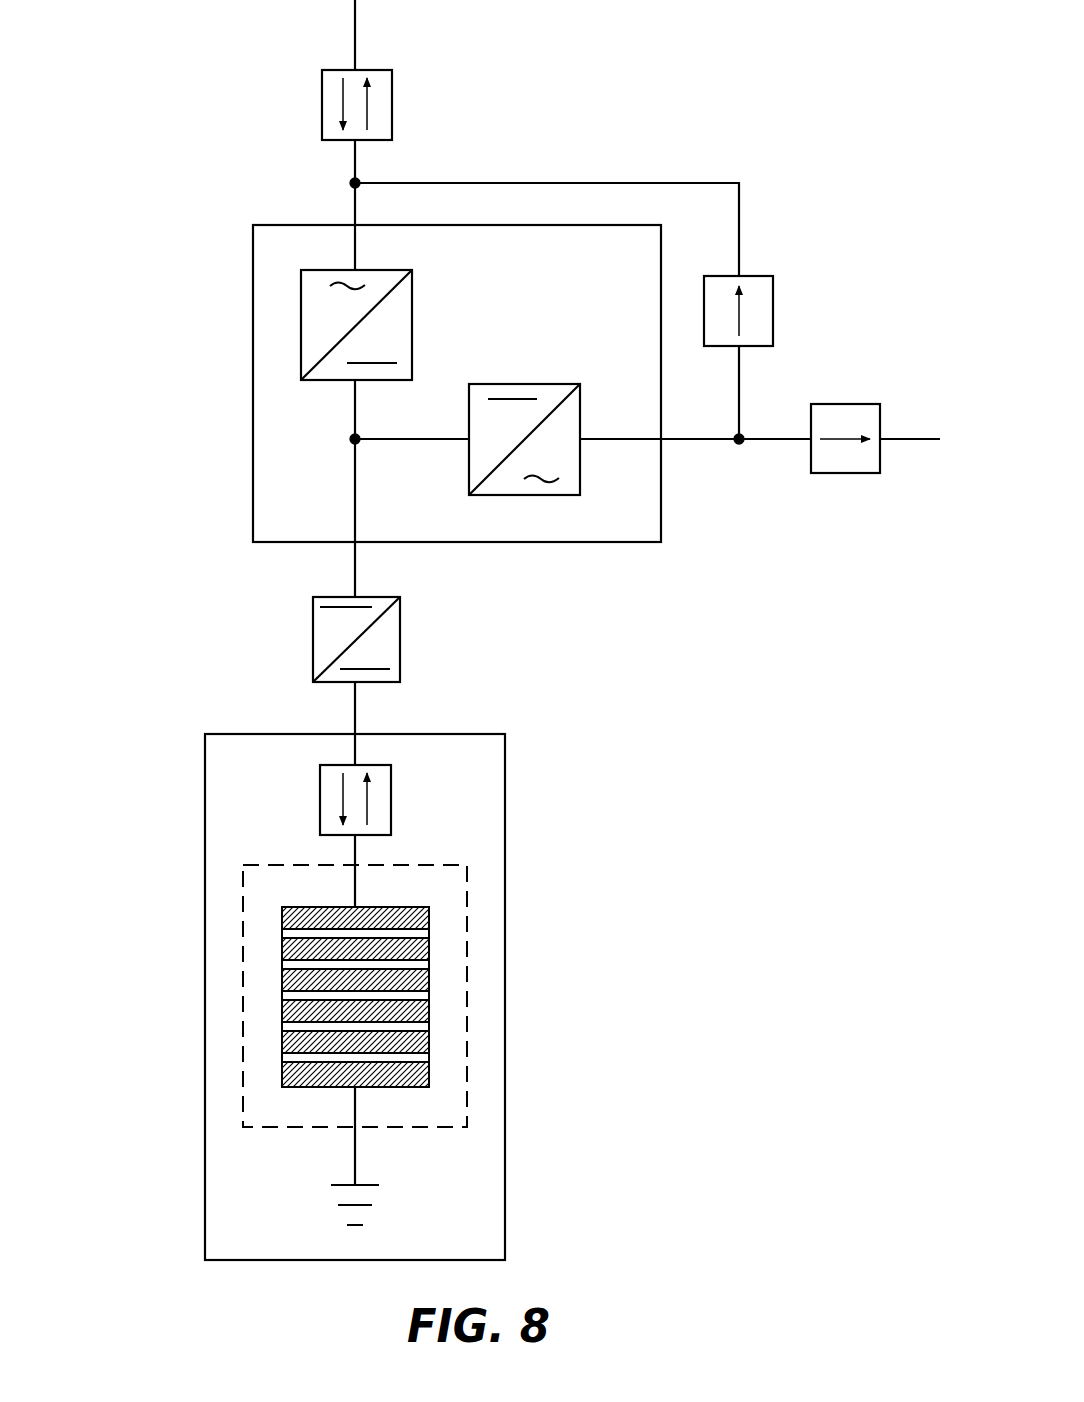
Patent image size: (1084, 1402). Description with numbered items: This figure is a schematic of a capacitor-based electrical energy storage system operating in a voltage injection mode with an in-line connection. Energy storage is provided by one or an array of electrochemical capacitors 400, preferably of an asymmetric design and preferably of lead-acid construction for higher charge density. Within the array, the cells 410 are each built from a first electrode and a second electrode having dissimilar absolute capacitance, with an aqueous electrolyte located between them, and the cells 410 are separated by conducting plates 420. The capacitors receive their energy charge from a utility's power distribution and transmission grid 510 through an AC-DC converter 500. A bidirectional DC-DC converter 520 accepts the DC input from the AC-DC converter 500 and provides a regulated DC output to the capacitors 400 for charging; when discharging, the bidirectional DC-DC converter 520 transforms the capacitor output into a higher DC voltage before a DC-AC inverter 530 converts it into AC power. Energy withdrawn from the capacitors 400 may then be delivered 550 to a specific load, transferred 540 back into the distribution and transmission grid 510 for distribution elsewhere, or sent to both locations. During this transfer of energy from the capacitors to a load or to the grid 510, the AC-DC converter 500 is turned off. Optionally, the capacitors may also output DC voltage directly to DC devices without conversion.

The electrochemical capacitor 400 is at (449, 1019).
The cells 410 is at (429, 917).
The conducting plates 420 is at (282, 997).
The AC-DC converter 500 is at (320, 308).
The distribution and transmission grid 510 is at (355, 200).
The bidirectional DC-DC converter 520 is at (313, 653).
The DC-AC inverter 530 is at (497, 487).
The transfer to grid 540 is at (766, 309).
The delivery to load 550 is at (852, 463).